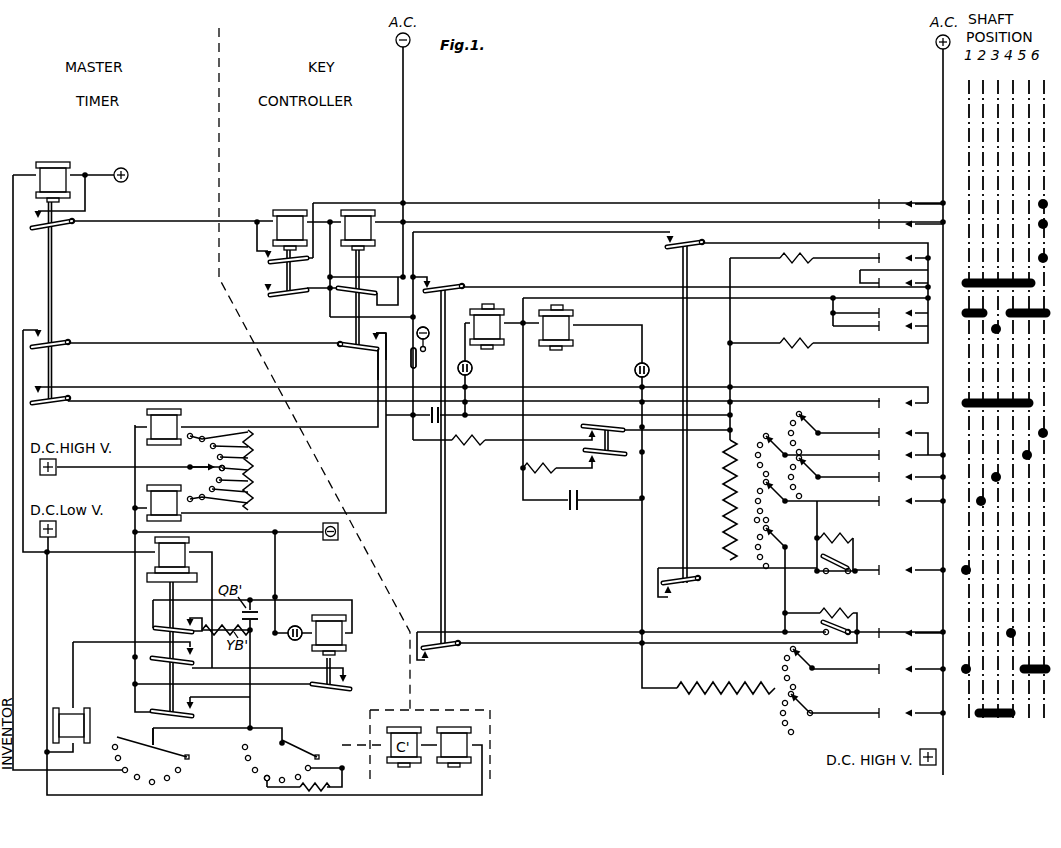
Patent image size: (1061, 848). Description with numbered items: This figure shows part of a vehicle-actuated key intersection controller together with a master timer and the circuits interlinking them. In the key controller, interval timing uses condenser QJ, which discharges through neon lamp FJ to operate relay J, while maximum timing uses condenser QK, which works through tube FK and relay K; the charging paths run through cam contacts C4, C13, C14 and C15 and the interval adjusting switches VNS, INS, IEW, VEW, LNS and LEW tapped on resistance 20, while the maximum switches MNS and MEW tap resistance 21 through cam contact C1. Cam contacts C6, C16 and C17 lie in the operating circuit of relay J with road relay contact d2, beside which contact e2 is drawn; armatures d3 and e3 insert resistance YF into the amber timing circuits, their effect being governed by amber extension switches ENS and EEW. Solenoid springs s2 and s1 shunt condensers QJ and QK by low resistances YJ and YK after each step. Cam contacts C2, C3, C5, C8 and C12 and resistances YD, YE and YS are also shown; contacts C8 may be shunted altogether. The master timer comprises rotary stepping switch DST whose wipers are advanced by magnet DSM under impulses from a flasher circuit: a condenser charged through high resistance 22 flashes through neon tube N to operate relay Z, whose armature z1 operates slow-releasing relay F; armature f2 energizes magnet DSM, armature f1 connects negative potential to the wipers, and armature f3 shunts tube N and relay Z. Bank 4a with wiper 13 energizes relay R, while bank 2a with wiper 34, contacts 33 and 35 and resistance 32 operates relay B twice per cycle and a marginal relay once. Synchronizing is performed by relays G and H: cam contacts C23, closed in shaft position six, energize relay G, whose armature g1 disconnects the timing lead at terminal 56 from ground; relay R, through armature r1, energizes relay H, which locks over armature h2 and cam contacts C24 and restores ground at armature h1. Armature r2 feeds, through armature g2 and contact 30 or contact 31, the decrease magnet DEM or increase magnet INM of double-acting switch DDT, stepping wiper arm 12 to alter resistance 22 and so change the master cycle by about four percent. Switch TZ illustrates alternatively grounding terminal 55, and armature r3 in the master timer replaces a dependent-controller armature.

The relay R is at (53, 182).
The relay H is at (290, 230).
The relay G is at (358, 230).
The relay J is at (487, 326).
The relay K is at (556, 327).
The relay F is at (172, 559).
The relay Z is at (329, 635).
The relay B is at (454, 747).
The timing increase magnet INM is at (150, 418).
The timing decrease magnet DEM is at (150, 496).
The driving magnet DSM is at (78, 712).
The double-acting rotary switch DDT is at (196, 477).
The rotary stepping switch DST is at (193, 745).
The armature r1 is at (58, 225).
The armature r2 is at (58, 346).
The armature r3 is at (45, 404).
The armature h1 is at (268, 295).
The armature h2 is at (268, 262).
The armature g1 is at (350, 290).
The armature g2 is at (347, 344).
The contact d2 is at (441, 288).
The armature d3 is at (444, 648).
The relay E contact 2 e2 is at (678, 247).
The armature e3 is at (683, 584).
The contact spring s1 is at (590, 452).
The contact spring s2 is at (590, 428).
The armature f1 is at (194, 715).
The armature f2 is at (160, 660).
The armature f3 is at (160, 628).
The armature z1 is at (351, 689).
The contact 30 is at (393, 343).
The contact 31 is at (376, 356).
The terminal 55 is at (413, 420).
The terminal 56 is at (426, 326).
The switch TZ is at (412, 366).
The neon tube N is at (294, 640).
The neon lamp FJ is at (473, 368).
The tube FK is at (634, 370).
The condenser QJ is at (435, 426).
The low resistance YJ is at (465, 444).
The low resistance YK is at (539, 459).
The condenser QK is at (568, 502).
The resistor YD is at (795, 265).
The resistor YE is at (795, 350).
The resistor YS is at (836, 531).
The resistance YF is at (836, 605).
The wiper arm 12 is at (210, 465).
The wiper 13 is at (126, 770).
The resistance 20 is at (724, 486).
The resistance 21 is at (686, 690).
The high resistance 22 is at (257, 458).
The bank 2a is at (307, 745).
The bank 4a is at (154, 746).
The resistance 32 is at (332, 783).
The contact 33 is at (265, 780).
The wiper 34 is at (271, 763).
The contact 35 is at (306, 767).
The interval adjusting switch VNS is at (808, 432).
The interval adjusting switch INS is at (773, 454).
The interval adjusting switch VEW is at (810, 476).
The interval adjusting switch LNS is at (796, 500).
The interval adjusting switch IEW is at (773, 511).
The interval adjusting switch LEW is at (780, 546).
The amber extension switch ENS is at (850, 562).
The amber extension switch EEW is at (821, 626).
The switch MNS is at (805, 667).
The switch MEW is at (807, 712).
The cam contact C1 is at (895, 669).
The shaft contact C2 is at (895, 633).
The shaft contact C3 is at (895, 455).
The cam contacts C4 is at (895, 433).
The shaft contact C5 is at (895, 258).
The cam contacts C6 is at (895, 313).
The cam contacts C8 is at (895, 403).
The shaft contact C12 is at (895, 713).
The cam contacts C13 is at (895, 570).
The cam contact C14 is at (895, 501).
The cam contacts C15 is at (895, 477).
The cam contacts C16 is at (895, 326).
The cam contacts C17 is at (895, 283).
The cam contacts C23 is at (895, 224).
The cam contacts C24 is at (895, 204).